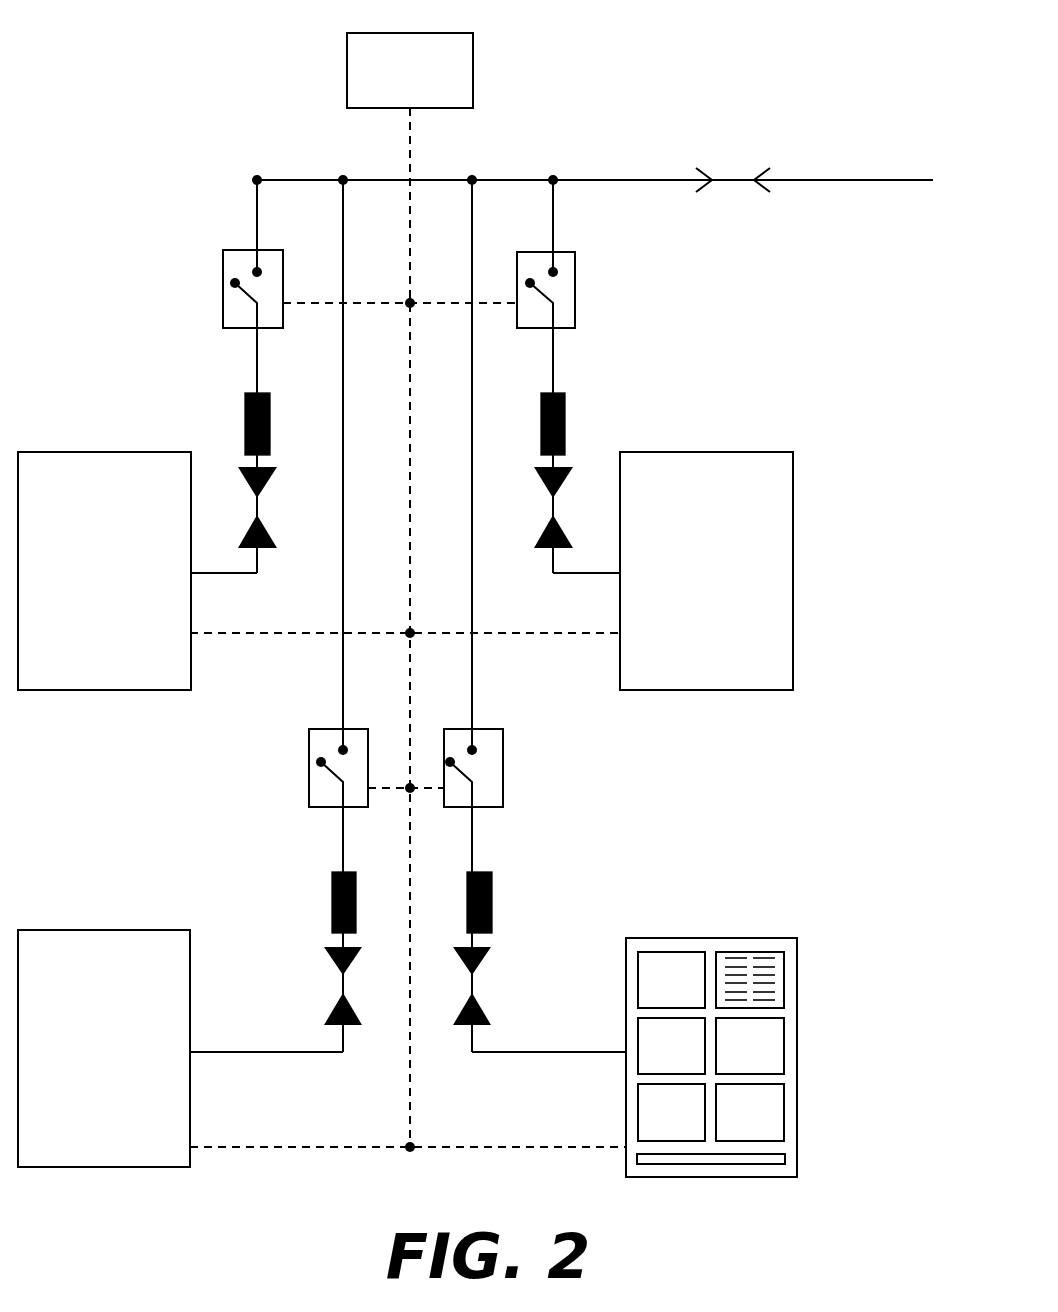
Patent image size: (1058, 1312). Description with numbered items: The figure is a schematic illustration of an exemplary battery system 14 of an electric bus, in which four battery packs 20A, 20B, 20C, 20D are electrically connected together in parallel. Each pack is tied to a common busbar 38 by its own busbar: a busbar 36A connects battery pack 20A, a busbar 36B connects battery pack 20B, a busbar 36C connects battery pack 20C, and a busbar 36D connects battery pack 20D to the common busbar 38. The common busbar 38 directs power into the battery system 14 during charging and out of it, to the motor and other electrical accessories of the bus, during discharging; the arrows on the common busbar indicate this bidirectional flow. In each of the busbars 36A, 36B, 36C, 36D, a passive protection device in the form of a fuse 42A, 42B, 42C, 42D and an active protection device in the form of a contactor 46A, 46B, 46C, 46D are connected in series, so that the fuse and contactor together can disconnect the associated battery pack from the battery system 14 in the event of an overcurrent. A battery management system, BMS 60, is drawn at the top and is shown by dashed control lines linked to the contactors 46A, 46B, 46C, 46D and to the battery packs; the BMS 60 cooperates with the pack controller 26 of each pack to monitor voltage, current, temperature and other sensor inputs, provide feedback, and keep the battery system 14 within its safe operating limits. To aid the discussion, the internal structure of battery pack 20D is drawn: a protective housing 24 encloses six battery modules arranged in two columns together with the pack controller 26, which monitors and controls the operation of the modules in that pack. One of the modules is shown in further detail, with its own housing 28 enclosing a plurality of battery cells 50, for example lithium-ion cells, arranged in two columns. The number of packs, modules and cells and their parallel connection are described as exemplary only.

The battery system 14 is at (148, 82).
The battery management system 60 is at (397, 84).
The common busbar 38 is at (828, 180).
The contactor 46A is at (223, 278).
The contactor 46B is at (575, 280).
The contactor 46C is at (309, 785).
The contactor 46D is at (503, 788).
The busbar 36A is at (257, 352).
The busbar 36B is at (553, 362).
The busbar 36C is at (343, 830).
The busbar 36D is at (472, 845).
The fuse 42A is at (245, 413).
The fuse 42B is at (565, 405).
The fuse 42C is at (332, 888).
The fuse 42D is at (492, 908).
The battery pack 20A is at (85, 583).
The battery pack 20B is at (686, 585).
The battery pack 20C is at (85, 1061).
The battery pack 20D is at (797, 1103).
The protective housing 24 is at (753, 1011).
The housing 28 is at (785, 944).
The battery cell 50 is at (760, 958).
The pack controller 26 is at (700, 1164).